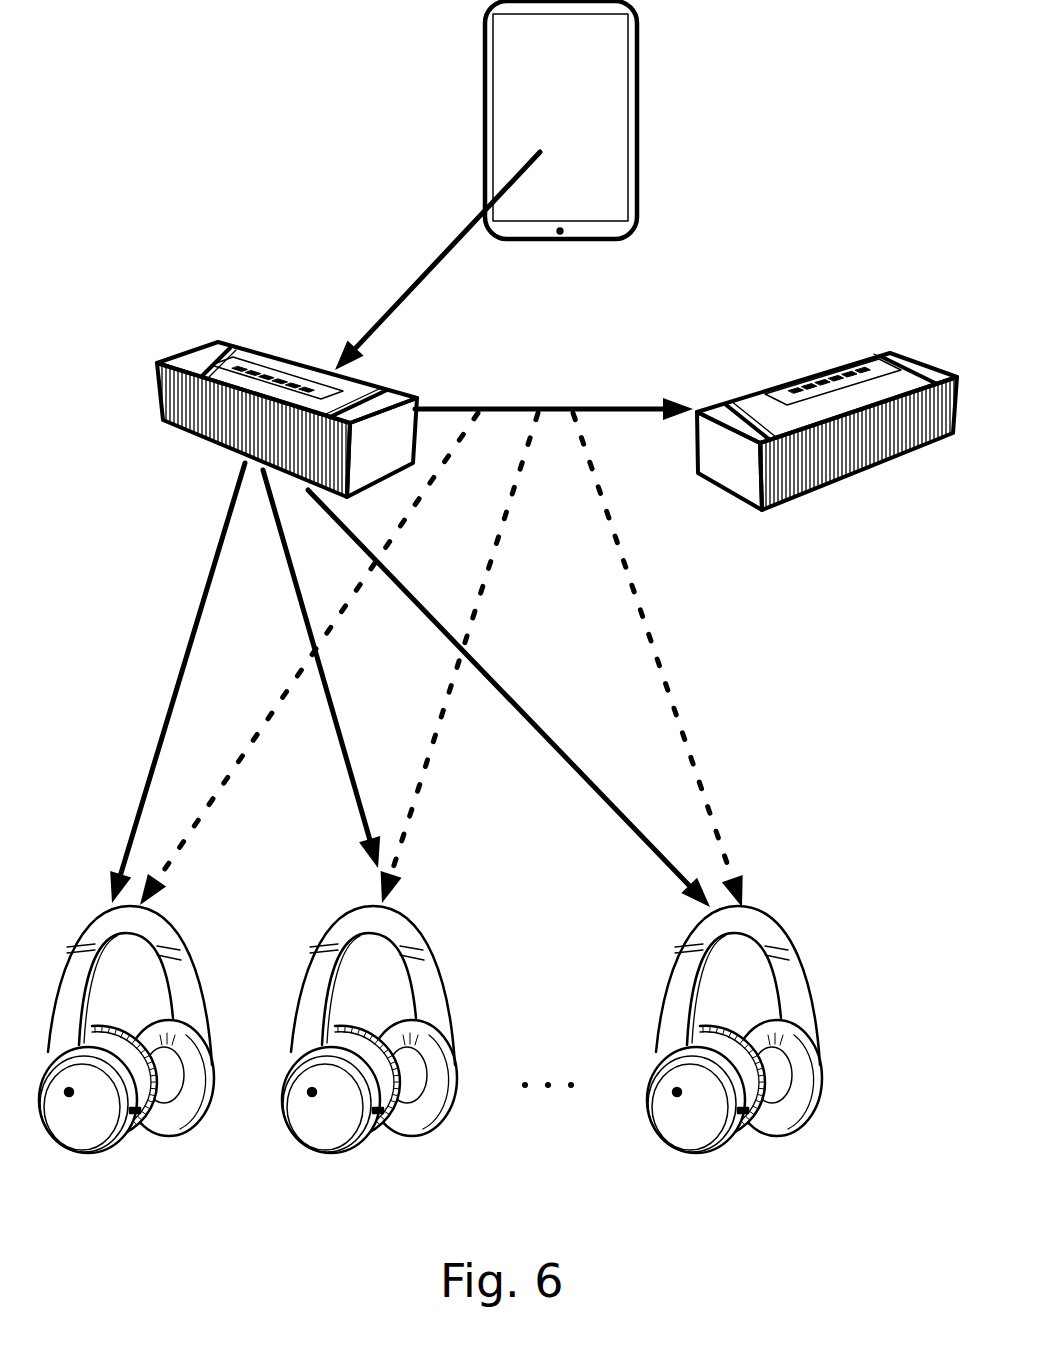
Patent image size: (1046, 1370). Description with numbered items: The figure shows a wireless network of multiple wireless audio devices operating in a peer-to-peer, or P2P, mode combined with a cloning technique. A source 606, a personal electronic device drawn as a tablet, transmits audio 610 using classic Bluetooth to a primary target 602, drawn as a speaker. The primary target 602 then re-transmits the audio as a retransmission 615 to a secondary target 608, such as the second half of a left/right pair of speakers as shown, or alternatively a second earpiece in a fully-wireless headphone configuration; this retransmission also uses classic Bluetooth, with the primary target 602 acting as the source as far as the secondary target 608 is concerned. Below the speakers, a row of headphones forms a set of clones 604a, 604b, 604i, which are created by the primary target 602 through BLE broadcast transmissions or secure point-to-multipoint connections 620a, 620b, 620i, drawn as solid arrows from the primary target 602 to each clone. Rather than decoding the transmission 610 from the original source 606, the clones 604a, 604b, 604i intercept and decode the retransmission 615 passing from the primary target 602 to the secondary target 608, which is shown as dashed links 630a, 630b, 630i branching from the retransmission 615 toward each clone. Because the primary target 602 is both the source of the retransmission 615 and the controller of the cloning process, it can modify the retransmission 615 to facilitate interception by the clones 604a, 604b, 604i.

The primary target 602 is at (157, 362).
The clone 604a is at (118, 1153).
The clone 604b is at (345, 1155).
The clone 604i is at (713, 1153).
The source 606 is at (638, 58).
The secondary target 608 is at (777, 382).
The audio transmission 610 is at (405, 292).
The retransmission 615 is at (597, 407).
The BLE broadcast transmission or secure point-to-multipoint connection 620a is at (213, 565).
The BLE broadcast transmission or secure point-to-multipoint connection 620b is at (328, 678).
The BLE broadcast transmission or secure point-to-multipoint connection 620i is at (547, 732).
The link 630a is at (270, 718).
The link 630b is at (418, 783).
The link 630i is at (652, 642).